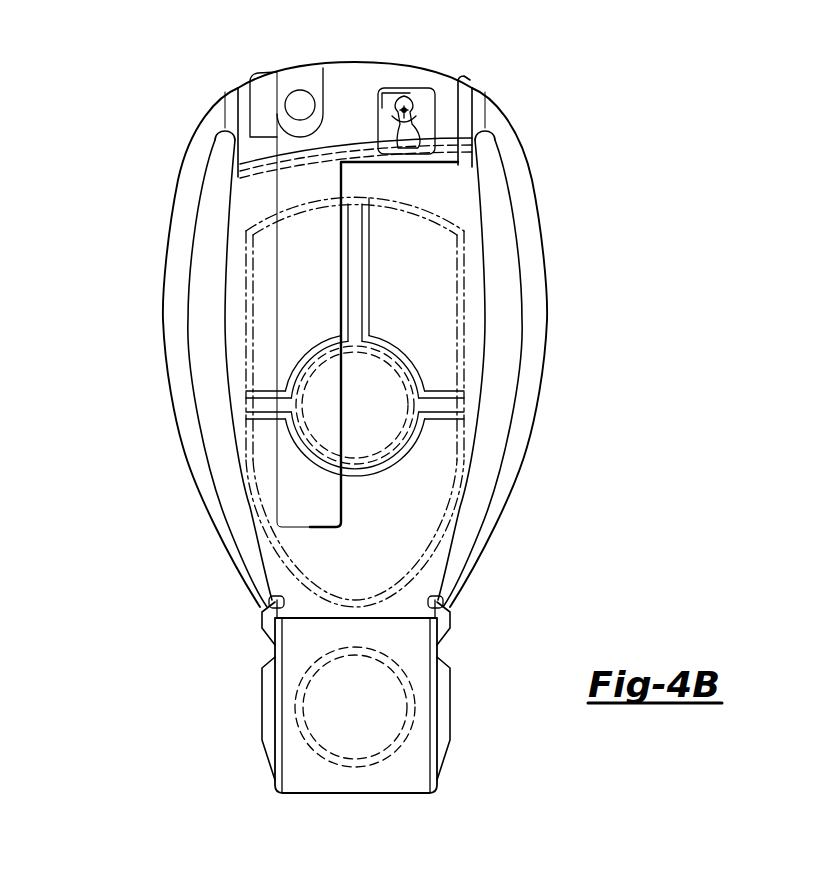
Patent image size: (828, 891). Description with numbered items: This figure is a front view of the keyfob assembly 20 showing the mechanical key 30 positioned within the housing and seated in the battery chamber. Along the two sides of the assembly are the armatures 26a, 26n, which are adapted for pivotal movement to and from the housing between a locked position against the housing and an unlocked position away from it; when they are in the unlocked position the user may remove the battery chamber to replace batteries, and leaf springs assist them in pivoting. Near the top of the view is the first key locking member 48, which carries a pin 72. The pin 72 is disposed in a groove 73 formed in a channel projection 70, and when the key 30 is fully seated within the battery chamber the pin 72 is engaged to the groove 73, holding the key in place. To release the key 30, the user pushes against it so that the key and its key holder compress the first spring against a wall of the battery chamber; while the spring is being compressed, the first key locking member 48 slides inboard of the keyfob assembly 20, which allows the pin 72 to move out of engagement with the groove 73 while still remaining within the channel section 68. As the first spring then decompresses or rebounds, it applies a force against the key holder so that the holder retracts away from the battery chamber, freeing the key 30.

The keyfob assembly 20 is at (156, 106).
The armature 26n is at (172, 290).
The armature 26a is at (540, 268).
The mechanical key 30 is at (278, 72).
The first key locking member 48 is at (432, 133).
The channel section 68 is at (434, 118).
The channel projection 70 is at (397, 160).
The pin 72 is at (401, 110).
The groove 73 is at (397, 126).